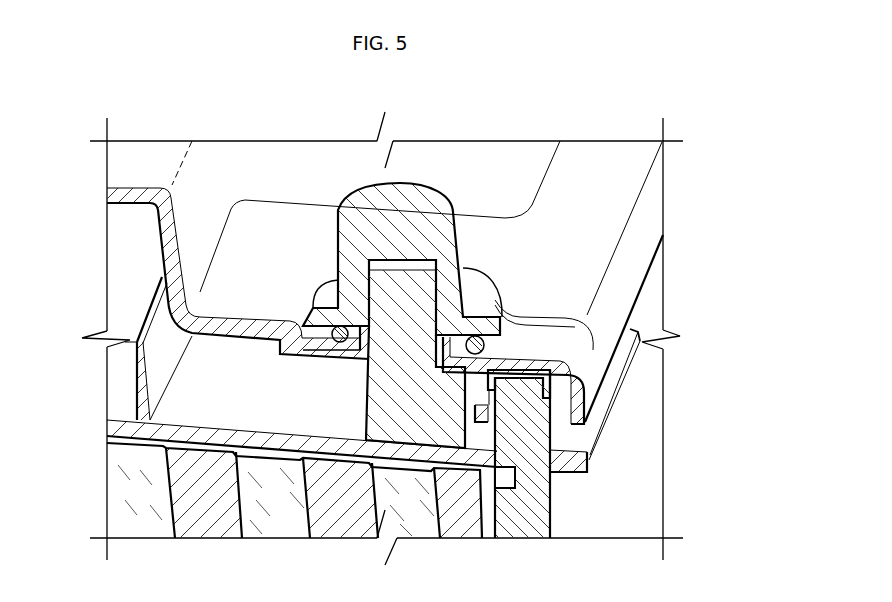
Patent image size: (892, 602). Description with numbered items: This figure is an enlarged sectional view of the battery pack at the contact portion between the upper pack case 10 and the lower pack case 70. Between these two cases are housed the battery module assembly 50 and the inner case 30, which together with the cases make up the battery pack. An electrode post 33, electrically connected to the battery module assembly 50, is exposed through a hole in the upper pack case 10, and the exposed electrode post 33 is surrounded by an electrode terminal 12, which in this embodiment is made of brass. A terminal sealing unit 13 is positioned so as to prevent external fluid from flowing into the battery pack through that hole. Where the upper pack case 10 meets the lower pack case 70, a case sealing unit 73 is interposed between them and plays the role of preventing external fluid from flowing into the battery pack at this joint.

The upper pack case 10 is at (588, 157).
The electrode terminal 12 is at (447, 236).
The terminal sealing unit 13 is at (497, 357).
The inner case 30 is at (137, 382).
The electrode post 33 is at (383, 289).
The battery module assembly 50 is at (120, 492).
The lower pack case 70 is at (607, 495).
The case sealing unit 73 is at (548, 372).